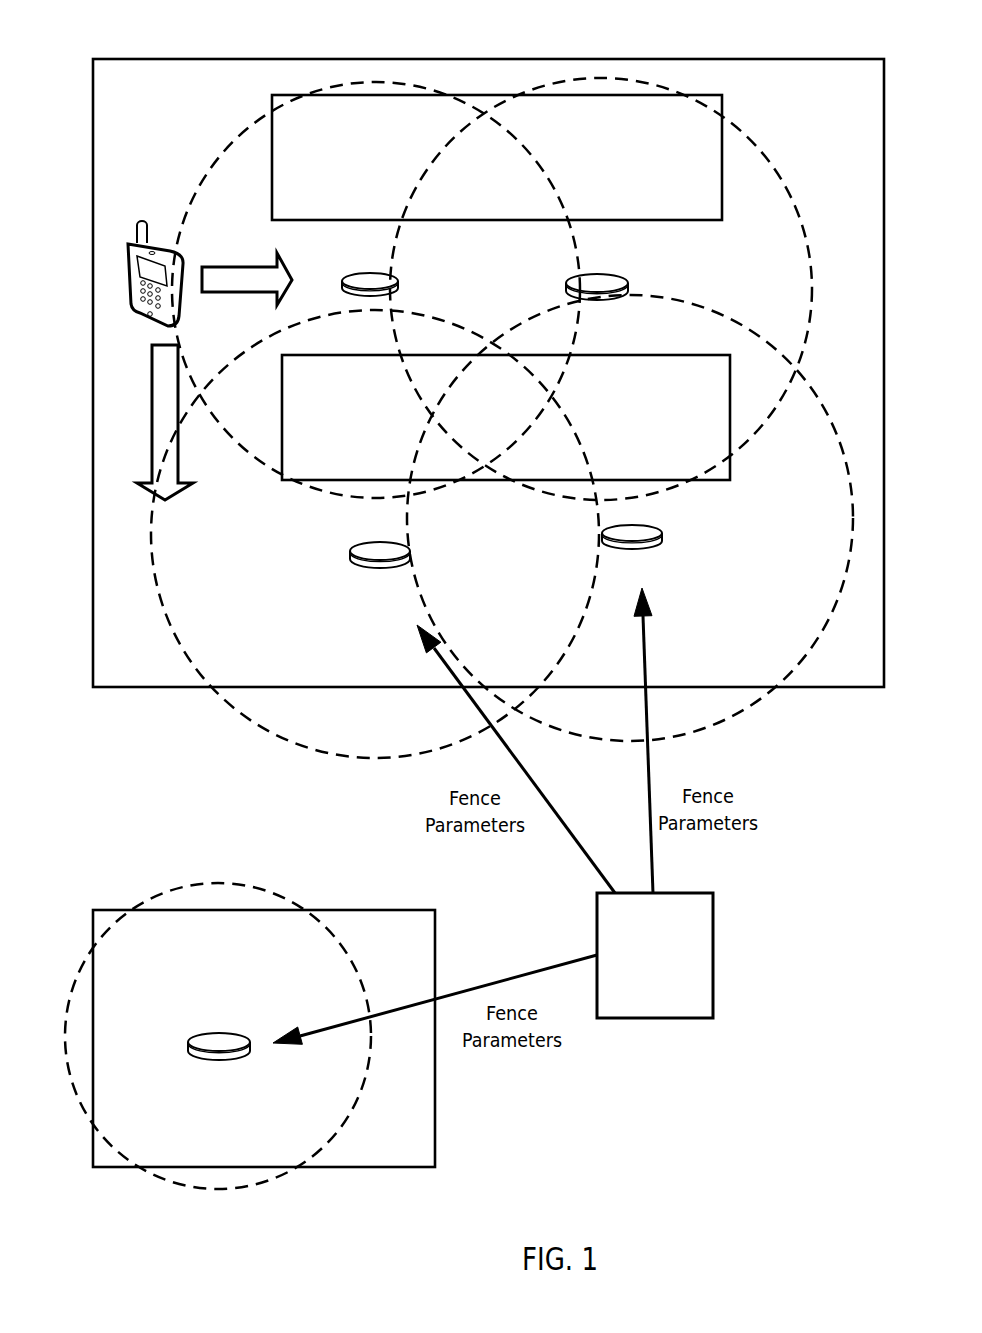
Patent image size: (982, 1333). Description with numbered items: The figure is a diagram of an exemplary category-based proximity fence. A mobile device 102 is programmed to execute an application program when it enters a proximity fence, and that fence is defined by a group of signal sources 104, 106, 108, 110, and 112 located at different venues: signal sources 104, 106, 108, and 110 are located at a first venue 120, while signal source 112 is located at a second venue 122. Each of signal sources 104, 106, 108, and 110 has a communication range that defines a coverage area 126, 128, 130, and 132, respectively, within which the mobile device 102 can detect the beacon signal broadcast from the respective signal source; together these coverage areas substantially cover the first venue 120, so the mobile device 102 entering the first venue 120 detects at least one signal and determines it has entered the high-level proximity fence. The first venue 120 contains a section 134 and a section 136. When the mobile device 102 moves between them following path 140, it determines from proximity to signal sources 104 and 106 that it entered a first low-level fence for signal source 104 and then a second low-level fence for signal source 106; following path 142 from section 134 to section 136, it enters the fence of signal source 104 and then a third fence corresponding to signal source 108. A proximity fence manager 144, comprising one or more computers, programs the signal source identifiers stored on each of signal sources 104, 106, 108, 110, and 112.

The mobile device 102 is at (128, 278).
The signal source 104 is at (400, 285).
The signal source 106 is at (628, 285).
The signal source 108 is at (352, 561).
The signal source 110 is at (660, 542).
The signal source 112 is at (216, 1034).
The first venue 120 is at (172, 58).
The second venue 122 is at (118, 908).
The coverage area 126 is at (342, 83).
The coverage area 128 is at (602, 77).
The coverage area 130 is at (230, 706).
The coverage area 132 is at (743, 707).
The section 134 is at (703, 93).
The section 136 is at (282, 425).
The path 140 is at (237, 265).
The path 142 is at (150, 420).
The proximity fence manager 144 is at (714, 938).